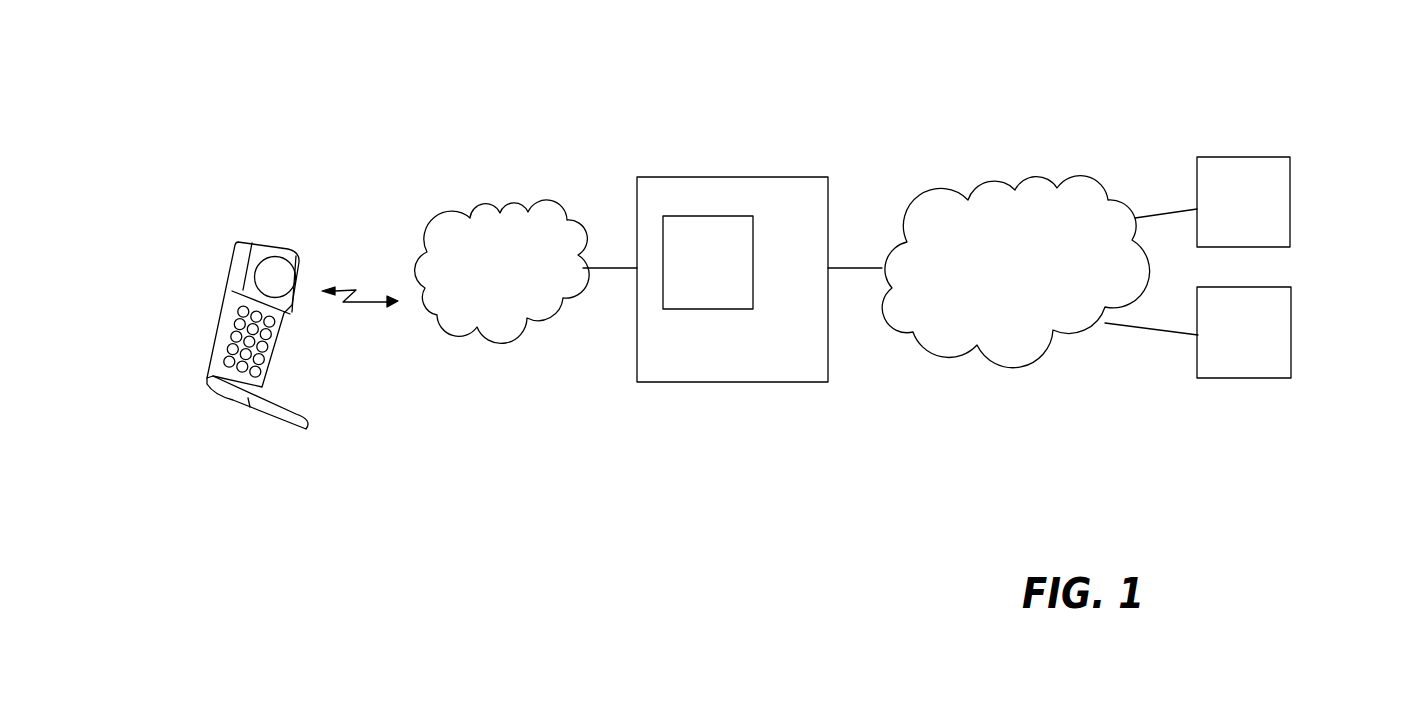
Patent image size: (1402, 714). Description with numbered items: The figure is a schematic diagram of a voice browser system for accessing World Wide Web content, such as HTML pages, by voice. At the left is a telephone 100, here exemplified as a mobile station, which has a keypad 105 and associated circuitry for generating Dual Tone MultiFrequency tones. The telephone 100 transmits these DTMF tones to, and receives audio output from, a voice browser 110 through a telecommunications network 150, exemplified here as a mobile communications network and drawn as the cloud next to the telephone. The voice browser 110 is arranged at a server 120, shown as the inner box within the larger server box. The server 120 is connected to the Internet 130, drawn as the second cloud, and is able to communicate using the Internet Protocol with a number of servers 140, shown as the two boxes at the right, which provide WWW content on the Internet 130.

The telephone 100 is at (235, 278).
The keypad 105 is at (245, 348).
The voice browser 110 is at (710, 240).
The server 120 is at (768, 197).
The Internet 130 is at (1068, 202).
The servers 140 is at (1253, 205).
The telecommunications network 150 is at (478, 247).